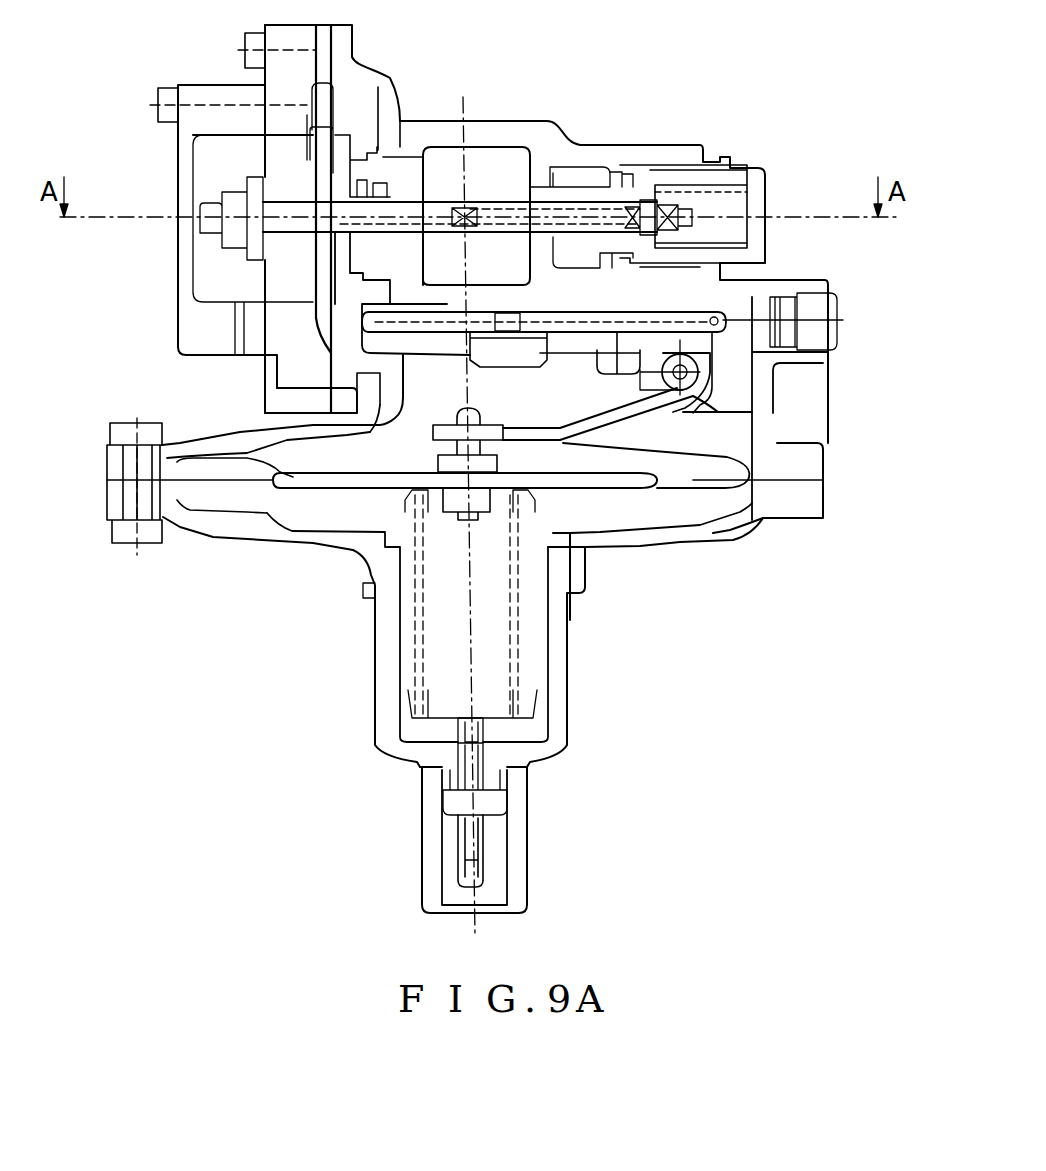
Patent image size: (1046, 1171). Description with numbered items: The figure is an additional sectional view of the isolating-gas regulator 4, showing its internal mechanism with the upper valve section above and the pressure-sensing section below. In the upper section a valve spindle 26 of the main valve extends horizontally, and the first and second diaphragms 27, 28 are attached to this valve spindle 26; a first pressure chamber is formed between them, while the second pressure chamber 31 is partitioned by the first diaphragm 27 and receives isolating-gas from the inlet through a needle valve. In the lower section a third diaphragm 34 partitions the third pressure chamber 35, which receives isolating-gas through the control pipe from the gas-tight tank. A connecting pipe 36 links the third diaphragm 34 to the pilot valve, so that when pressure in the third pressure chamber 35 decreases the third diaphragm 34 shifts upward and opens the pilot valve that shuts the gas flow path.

The isolating-gas regulator 4 is at (746, 118).
The valve spindle 26 is at (490, 207).
The first diaphragm 27 is at (323, 112).
The second diaphragm 28 is at (260, 163).
The second pressure chamber 31 is at (357, 110).
The third diaphragm 34 is at (760, 457).
The third pressure chamber 35 is at (425, 412).
The connecting pipe 36 is at (747, 420).